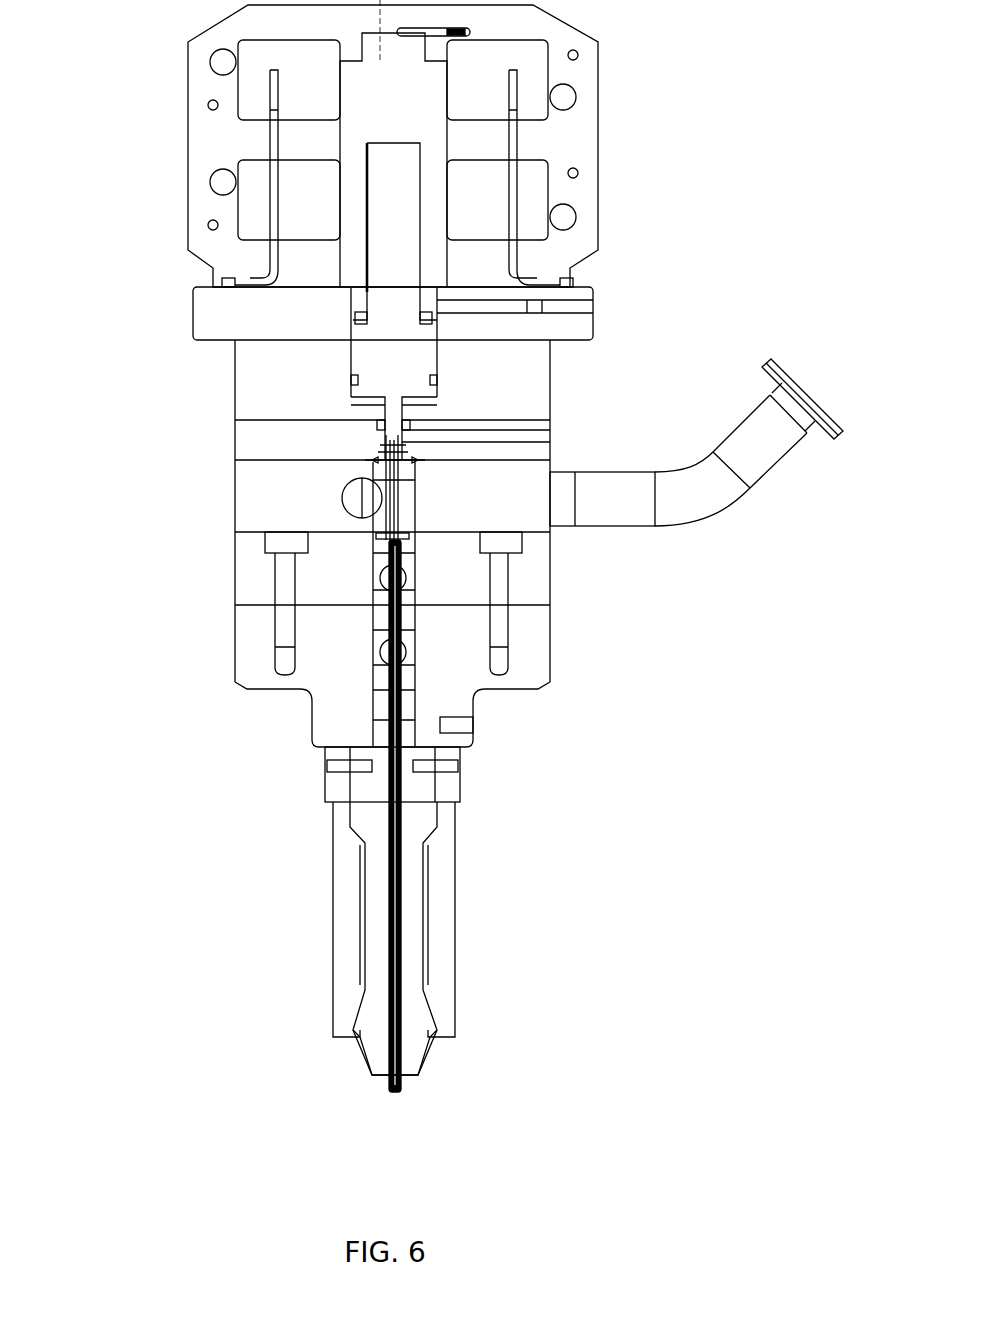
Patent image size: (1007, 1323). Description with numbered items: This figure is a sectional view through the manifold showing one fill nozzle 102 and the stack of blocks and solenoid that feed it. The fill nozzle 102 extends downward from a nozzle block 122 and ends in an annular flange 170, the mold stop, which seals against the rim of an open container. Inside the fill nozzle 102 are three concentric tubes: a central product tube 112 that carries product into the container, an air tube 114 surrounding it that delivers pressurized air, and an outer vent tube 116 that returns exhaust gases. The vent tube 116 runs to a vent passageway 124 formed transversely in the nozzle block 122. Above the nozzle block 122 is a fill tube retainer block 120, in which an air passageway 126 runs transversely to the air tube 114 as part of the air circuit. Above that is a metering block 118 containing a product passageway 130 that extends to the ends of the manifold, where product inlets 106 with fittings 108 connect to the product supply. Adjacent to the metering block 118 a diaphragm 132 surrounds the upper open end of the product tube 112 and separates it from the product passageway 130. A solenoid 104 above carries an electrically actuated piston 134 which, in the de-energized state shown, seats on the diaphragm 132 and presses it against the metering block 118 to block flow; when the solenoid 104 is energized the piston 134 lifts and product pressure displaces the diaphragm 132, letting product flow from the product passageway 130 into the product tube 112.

The fill nozzle 102 is at (457, 968).
The solenoid assembly 104 is at (420, 80).
The product inlet 106 is at (780, 465).
The fitting 108 is at (770, 358).
The product tube 112 is at (407, 503).
The air tube 114 is at (400, 597).
The vent tube 116 is at (363, 692).
The metering block 118 is at (241, 494).
The fill tube retainer block 120 is at (235, 576).
The nozzle block 122 is at (235, 662).
The vent passageway 124 is at (407, 652).
The air passageway 126 is at (378, 537).
The product passageway 130 is at (352, 497).
The diaphragm 132 is at (407, 433).
The piston 134 is at (393, 378).
The annular flange 170 is at (352, 1037).